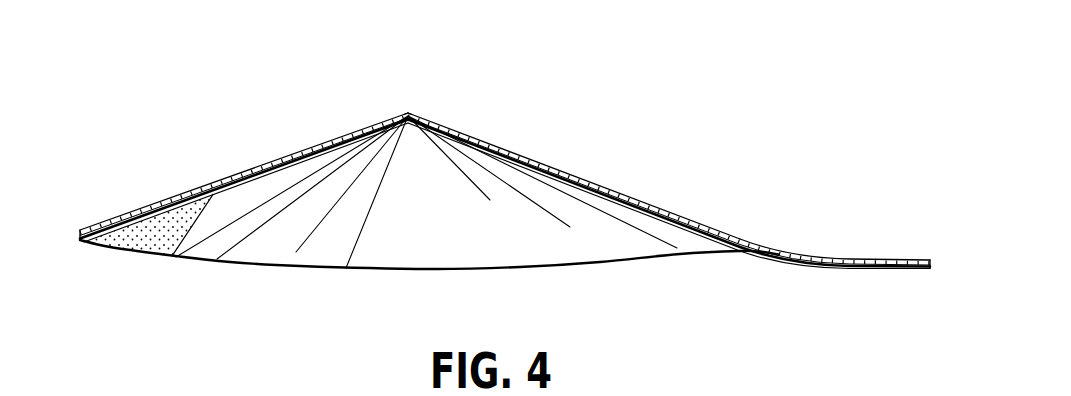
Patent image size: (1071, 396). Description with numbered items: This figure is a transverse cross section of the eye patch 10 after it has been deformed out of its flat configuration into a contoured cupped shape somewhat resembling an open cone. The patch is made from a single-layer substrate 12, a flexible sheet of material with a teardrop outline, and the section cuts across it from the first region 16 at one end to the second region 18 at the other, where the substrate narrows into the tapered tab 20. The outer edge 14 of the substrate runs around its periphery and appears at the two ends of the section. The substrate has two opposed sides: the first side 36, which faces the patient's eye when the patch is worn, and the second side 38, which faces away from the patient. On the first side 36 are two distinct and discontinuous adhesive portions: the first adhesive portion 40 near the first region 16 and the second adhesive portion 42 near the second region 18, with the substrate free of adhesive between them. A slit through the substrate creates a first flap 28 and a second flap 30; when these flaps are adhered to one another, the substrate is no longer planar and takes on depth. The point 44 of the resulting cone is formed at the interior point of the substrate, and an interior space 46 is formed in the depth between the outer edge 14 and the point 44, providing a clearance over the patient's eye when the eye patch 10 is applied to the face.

The eye patch 10 is at (608, 104).
The single-layer substrate 12 is at (522, 153).
The outer edge 14 is at (437, 271).
The first region 16 is at (107, 221).
The second region 18 is at (824, 240).
The tapered tab 20 is at (932, 262).
The first flap 28 is at (240, 184).
The second flap 30 is at (204, 194).
The first side 36 is at (573, 244).
The second side 38 is at (608, 186).
The first adhesive portion 40 is at (120, 235).
The second adhesive portion 42 is at (867, 270).
The point 44 is at (410, 110).
The interior space 46 is at (364, 233).